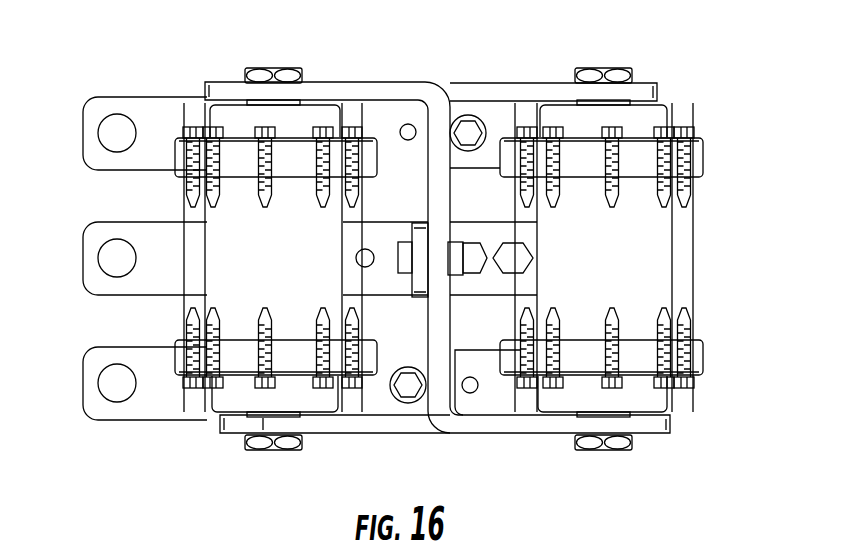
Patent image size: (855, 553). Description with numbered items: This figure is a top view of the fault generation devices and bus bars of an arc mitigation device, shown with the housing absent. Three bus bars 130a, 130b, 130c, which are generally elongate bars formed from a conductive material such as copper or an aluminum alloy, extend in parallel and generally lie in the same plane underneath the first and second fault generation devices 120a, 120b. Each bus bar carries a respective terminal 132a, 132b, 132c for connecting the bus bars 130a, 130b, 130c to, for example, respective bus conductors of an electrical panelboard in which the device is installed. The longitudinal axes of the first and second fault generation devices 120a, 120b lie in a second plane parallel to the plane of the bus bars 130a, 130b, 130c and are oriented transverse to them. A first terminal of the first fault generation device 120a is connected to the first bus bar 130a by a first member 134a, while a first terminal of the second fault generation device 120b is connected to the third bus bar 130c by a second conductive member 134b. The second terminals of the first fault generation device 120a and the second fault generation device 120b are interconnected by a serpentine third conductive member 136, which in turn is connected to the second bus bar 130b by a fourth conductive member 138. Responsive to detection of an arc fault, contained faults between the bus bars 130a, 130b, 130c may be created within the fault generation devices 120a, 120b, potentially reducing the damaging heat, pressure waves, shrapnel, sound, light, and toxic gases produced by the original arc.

The first fault generation device 120a is at (693, 158).
The second fault generation device 120b is at (262, 160).
The first bus bar 130a is at (408, 124).
The second bus bar 130b is at (390, 232).
The third bus bar 130c is at (390, 362).
The terminal of first bus bar 132a is at (113, 107).
The terminal of second bus bar 132b is at (113, 232).
The terminal of third bus bar 132c is at (113, 357).
The first member 134a is at (547, 95).
The second conductive member 134b is at (343, 427).
The serpentine third conductive member 136 is at (383, 90).
The fourth conductive member 138 is at (420, 257).